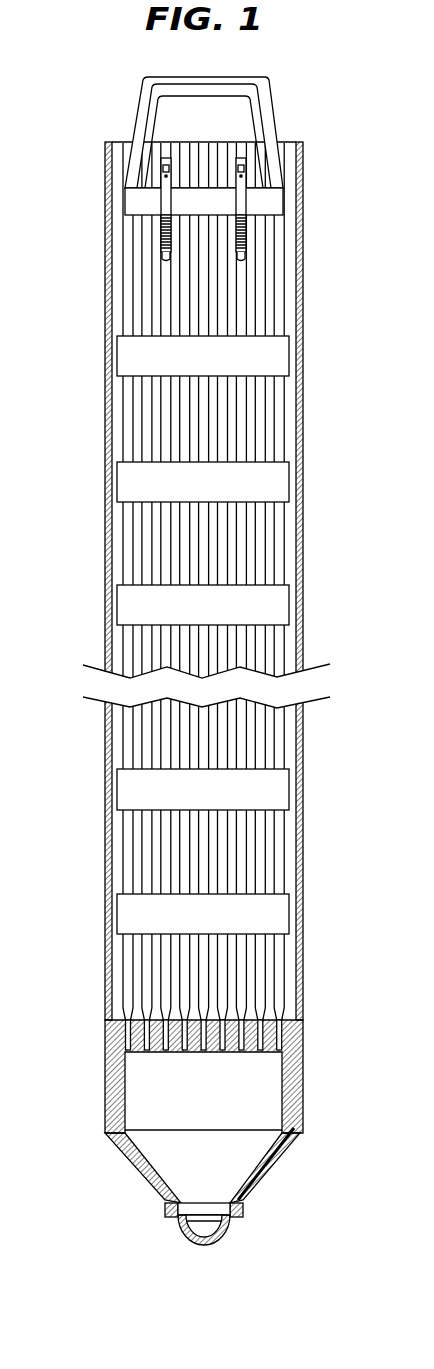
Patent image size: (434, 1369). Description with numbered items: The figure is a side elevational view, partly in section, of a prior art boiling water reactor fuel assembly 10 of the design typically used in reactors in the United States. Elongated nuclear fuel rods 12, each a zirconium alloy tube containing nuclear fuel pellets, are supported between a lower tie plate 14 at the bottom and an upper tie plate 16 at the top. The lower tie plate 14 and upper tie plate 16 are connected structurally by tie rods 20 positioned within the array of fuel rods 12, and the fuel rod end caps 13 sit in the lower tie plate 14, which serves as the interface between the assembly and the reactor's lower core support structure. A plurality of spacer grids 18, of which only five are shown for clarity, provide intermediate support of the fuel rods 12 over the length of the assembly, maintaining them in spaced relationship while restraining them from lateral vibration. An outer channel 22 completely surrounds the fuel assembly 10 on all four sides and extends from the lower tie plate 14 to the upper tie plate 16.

The fuel assembly 10 is at (72, 572).
The nuclear fuel rods 12 is at (130, 430).
The fuel rod end caps 13 is at (150, 1052).
The lower tie plate 14 is at (282, 1112).
The upper tie plate 16 is at (127, 201).
The spacer grids 18 is at (127, 353).
The tie rods 20 is at (160, 290).
The outer channel 22 is at (106, 850).